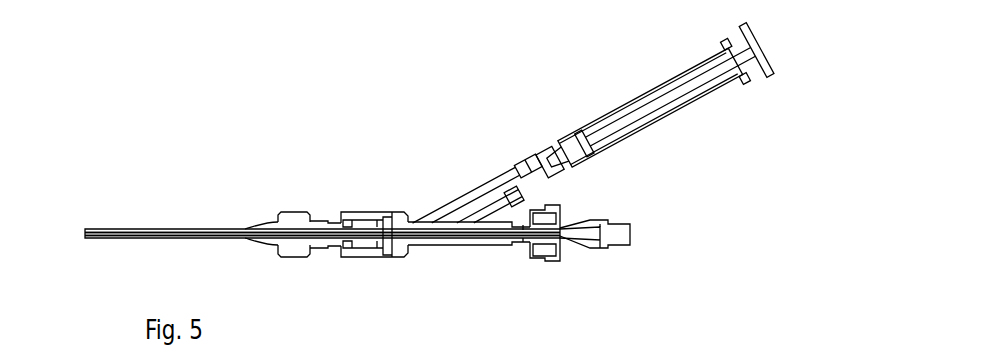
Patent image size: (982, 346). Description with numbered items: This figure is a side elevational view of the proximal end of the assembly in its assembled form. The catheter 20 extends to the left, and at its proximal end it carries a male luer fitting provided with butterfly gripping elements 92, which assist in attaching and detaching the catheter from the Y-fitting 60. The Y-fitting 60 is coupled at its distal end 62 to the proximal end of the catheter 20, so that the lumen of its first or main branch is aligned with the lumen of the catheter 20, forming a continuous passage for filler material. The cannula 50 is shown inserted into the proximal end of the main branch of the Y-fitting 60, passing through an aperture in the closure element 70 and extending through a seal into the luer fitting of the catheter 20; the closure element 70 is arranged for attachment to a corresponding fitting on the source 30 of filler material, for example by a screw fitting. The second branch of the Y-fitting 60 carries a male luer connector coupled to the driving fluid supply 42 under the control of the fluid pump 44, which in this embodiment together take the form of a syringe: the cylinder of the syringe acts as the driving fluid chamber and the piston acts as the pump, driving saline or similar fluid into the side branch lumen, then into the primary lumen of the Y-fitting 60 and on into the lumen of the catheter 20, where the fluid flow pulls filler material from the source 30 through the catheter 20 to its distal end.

The catheter 20 is at (146, 212).
The source of filler material 30 is at (605, 253).
The supply of driving fluid 42 is at (579, 146).
The fluid pump 44 is at (632, 100).
The cannula 50 is at (504, 245).
The Y-fitting 60 is at (457, 264).
The distal end of the Y-fitting 62 is at (389, 263).
The closure element 70 is at (551, 264).
The butterfly gripping elements 92 is at (291, 203).